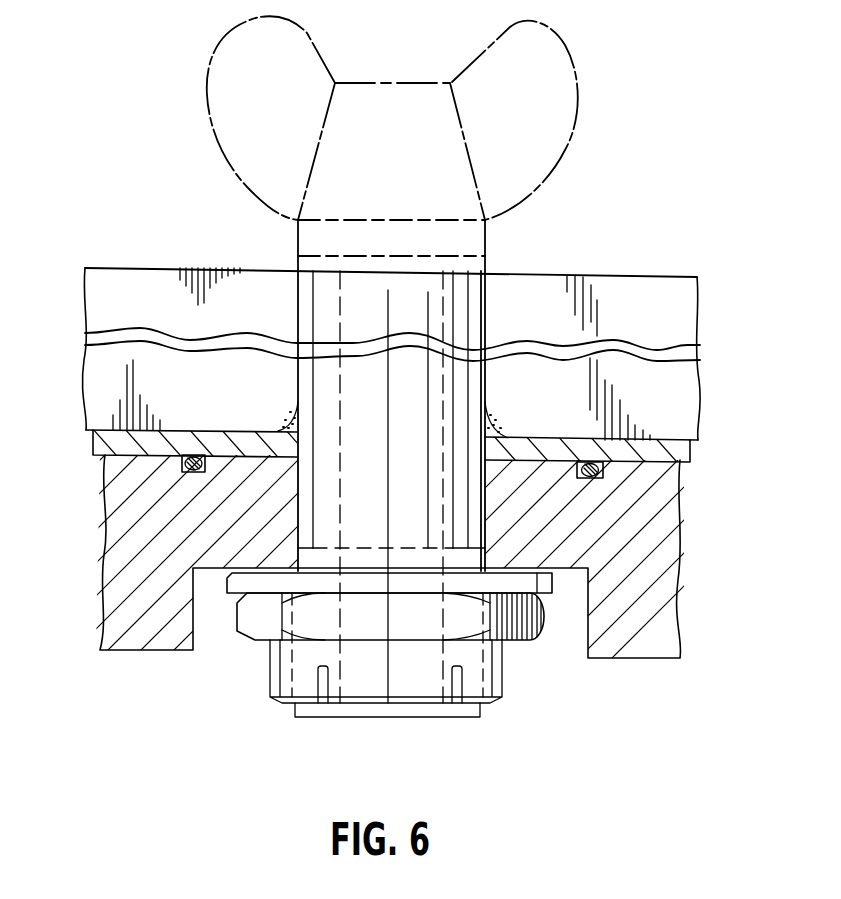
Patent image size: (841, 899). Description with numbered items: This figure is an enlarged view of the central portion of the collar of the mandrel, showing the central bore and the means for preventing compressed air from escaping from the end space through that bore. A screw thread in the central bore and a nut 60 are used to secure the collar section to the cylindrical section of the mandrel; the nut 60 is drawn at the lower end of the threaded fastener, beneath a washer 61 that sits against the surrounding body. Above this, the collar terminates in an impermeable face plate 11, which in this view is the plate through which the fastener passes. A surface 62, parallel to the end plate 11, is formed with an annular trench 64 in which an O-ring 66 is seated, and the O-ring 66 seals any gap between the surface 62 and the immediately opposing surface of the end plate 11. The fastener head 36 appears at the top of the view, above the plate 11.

The face plate 11 is at (657, 448).
The wing nut fastener 36 is at (565, 143).
The nut 60 is at (548, 615).
The washer 61 is at (225, 580).
The surface 62 is at (237, 455).
The annular trench 64 is at (185, 473).
The O-ring 66 is at (598, 483).